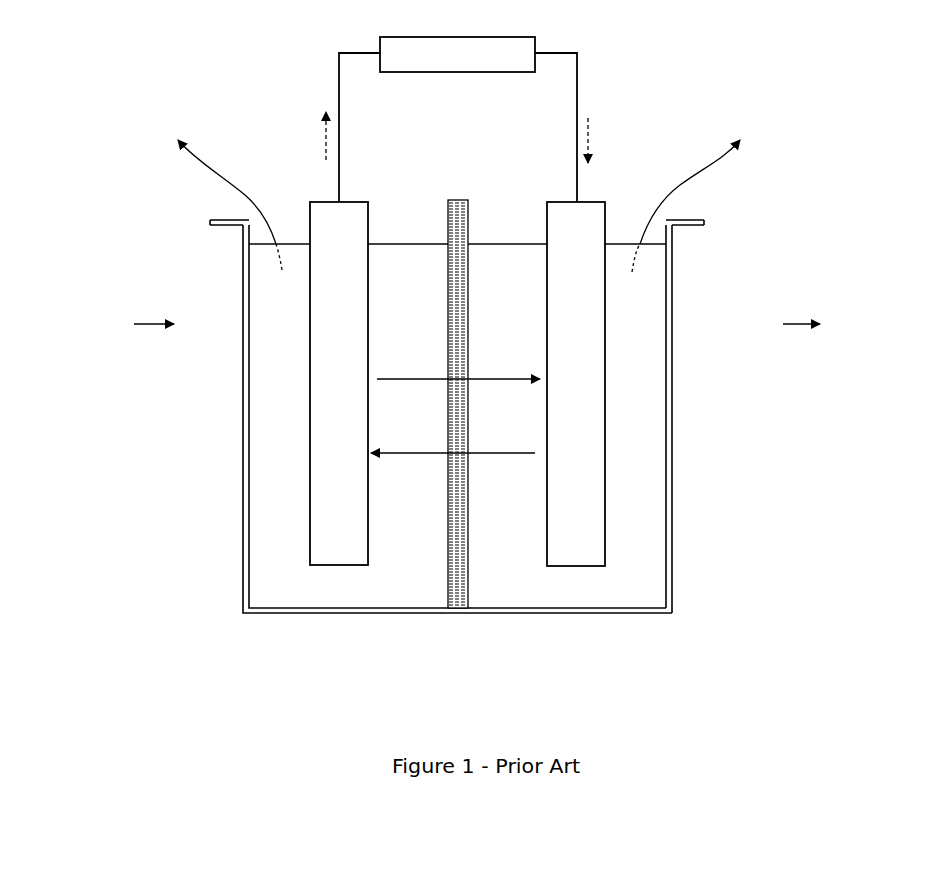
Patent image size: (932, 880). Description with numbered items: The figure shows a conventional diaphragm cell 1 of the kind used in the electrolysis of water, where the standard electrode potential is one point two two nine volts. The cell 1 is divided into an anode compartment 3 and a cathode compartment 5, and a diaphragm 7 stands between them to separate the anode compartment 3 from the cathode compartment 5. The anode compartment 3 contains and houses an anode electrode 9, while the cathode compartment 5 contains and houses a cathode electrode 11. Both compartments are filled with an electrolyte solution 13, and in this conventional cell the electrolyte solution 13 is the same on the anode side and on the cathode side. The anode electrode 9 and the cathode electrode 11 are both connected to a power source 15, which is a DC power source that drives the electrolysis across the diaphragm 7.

The diaphragm cell 1 is at (479, 325).
The anode compartment 3 is at (243, 433).
The cathode compartment 5 is at (673, 440).
The diaphragm 7 is at (447, 232).
The anode electrode 9 is at (309, 208).
The cathode electrode 11 is at (607, 208).
The electrolyte solution 13 is at (278, 535).
The power source 15 is at (492, 72).